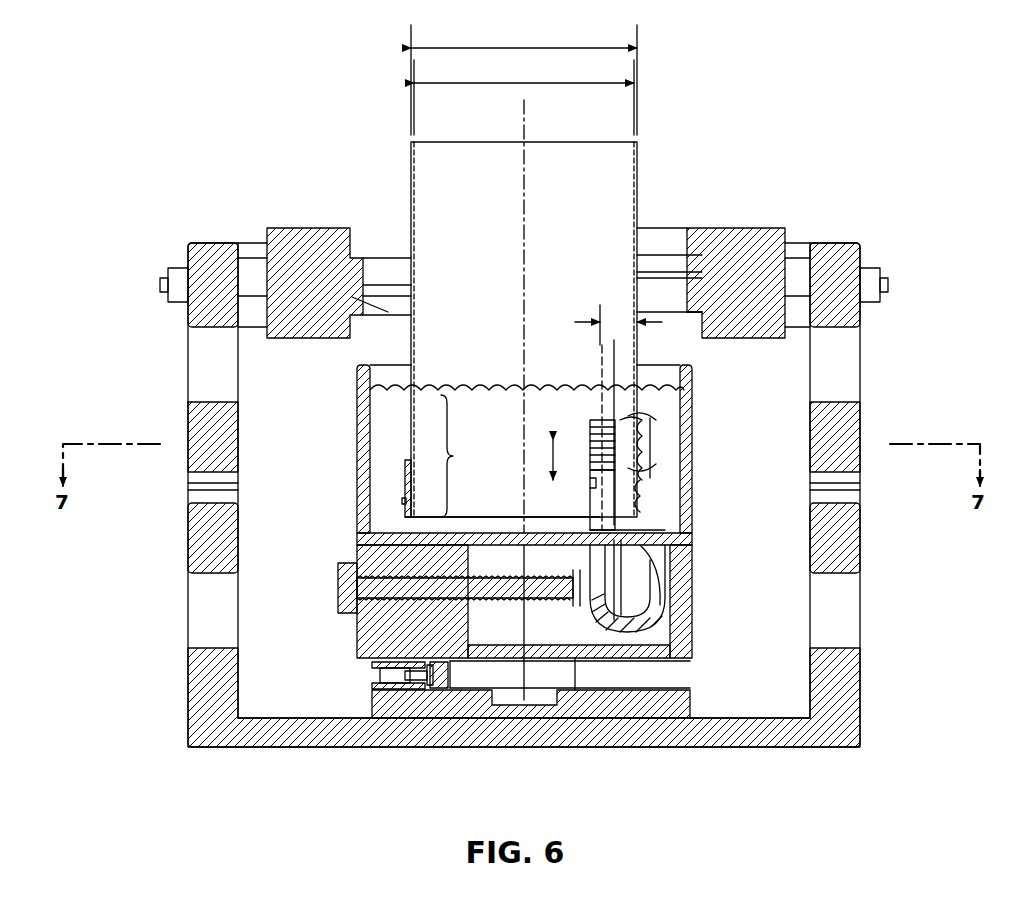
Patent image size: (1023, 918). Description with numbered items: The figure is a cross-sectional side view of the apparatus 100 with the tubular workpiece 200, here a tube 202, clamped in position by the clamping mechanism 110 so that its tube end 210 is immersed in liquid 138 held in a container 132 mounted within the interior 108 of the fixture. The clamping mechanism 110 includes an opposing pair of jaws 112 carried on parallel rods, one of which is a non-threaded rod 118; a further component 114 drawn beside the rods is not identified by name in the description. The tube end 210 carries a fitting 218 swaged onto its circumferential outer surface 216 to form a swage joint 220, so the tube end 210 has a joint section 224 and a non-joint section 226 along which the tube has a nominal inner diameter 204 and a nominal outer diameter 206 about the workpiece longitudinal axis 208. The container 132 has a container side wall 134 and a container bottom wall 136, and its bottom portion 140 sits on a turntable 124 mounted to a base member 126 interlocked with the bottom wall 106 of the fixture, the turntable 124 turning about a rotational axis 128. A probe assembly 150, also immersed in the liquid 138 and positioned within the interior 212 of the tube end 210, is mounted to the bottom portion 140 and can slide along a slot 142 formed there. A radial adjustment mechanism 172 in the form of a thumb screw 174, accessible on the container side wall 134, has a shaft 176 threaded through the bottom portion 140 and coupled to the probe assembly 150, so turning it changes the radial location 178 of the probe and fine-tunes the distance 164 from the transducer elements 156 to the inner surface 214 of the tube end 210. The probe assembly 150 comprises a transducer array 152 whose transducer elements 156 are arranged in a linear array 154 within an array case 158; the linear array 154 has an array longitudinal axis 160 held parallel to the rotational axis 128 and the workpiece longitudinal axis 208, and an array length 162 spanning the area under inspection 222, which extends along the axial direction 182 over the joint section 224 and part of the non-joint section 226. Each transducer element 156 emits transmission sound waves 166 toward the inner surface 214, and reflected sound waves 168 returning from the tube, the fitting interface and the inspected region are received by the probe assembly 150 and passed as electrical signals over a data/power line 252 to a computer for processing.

The apparatus 100 is at (206, 236).
The bottom wall 106 is at (218, 748).
The interior 108 is at (278, 684).
The clamping mechanism 110 is at (303, 224).
The jaws 112 is at (760, 234).
The clamp fasteners 114 is at (670, 236).
The non-threaded rod 118 is at (800, 259).
The turntable 124 is at (370, 674).
The base member 126 is at (378, 682).
The rotational axis 128 is at (374, 700).
The container 132 is at (355, 369).
The container side wall 134 is at (357, 416).
The container bottom wall 136 is at (690, 661).
The liquid 138 is at (692, 382).
The bottom portion 140 is at (449, 690).
The slot 142 is at (514, 706).
The probe assembly 150 is at (630, 518).
The transducer array 152 is at (652, 528).
The linear array 154 is at (632, 539).
The transducer elements 156 is at (589, 422).
The array case 158 is at (642, 557).
The array longitudinal axis 160 is at (601, 360).
The array length 162 is at (589, 496).
The distance 164 is at (586, 310).
The transmission sound waves 166 is at (650, 456).
The reflected sound waves 168 is at (638, 505).
The radial adjustment mechanism 172 is at (360, 556).
The thumb screw 174 is at (338, 590).
The shaft 176 is at (362, 619).
The radial location 178 is at (575, 668).
The axial direction 182 is at (543, 462).
The tubular workpiece 200 is at (411, 150).
The tube 202 is at (411, 180).
The nominal inner diameter 204 is at (493, 84).
The nominal outer diameter 206 is at (490, 49).
The workpiece longitudinal axis 208 is at (528, 113).
The tube end 210 is at (408, 422).
The interior 212 is at (485, 165).
The inner surface 214 is at (634, 176).
The circumferential outer surface 216 is at (639, 154).
The fitting 218 is at (405, 470).
The swage joint 220 is at (404, 495).
The area under inspection 222 is at (660, 473).
The joint section 224 is at (467, 486).
The non-joint section 226 is at (462, 456).
The data/power line 252 is at (642, 604).